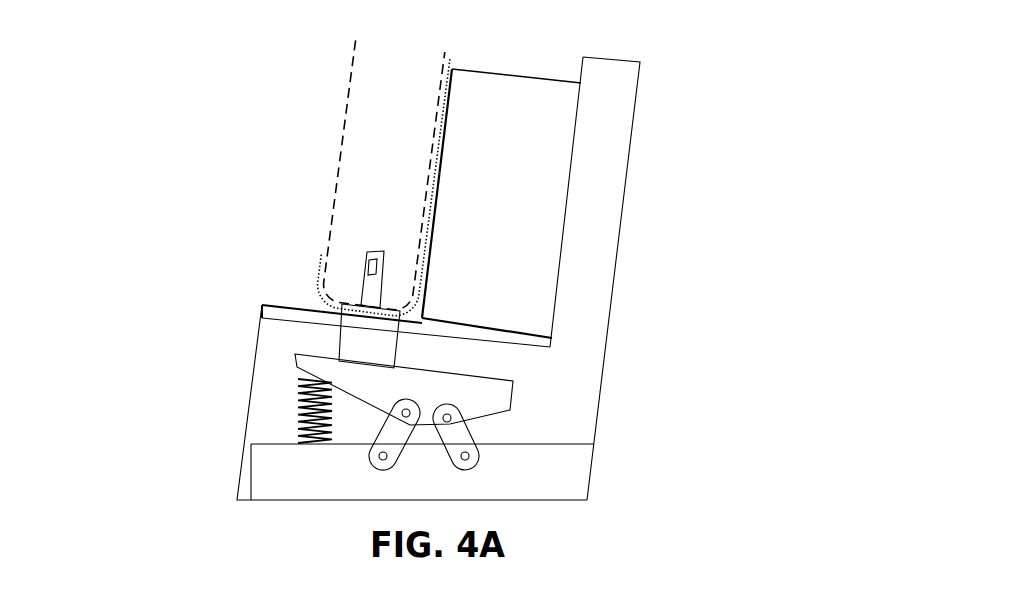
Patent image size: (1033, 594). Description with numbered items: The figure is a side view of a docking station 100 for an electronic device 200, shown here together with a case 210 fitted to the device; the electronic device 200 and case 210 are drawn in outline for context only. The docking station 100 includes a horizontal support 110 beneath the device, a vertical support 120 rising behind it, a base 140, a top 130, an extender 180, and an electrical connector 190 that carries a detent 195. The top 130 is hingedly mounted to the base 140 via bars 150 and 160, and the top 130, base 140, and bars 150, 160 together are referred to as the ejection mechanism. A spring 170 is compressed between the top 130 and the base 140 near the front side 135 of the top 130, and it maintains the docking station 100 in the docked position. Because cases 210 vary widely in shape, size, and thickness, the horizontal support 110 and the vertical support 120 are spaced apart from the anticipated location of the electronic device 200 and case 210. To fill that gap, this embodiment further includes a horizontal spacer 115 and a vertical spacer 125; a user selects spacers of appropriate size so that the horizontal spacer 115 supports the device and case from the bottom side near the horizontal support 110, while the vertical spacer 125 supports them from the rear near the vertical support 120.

The docking station 100 is at (142, 124).
The horizontal support 110 is at (505, 338).
The horizontal spacer 115 is at (470, 325).
The vertical support 120 is at (571, 192).
The vertical spacer 125 is at (530, 170).
The top 130 is at (497, 388).
The front side 135 is at (307, 367).
The base 140 is at (538, 480).
The bar 150 is at (468, 465).
The bar 160 is at (375, 462).
The spring 170 is at (298, 412).
The extender 180 is at (348, 347).
The electrical connector 190 is at (372, 287).
The detent 195 is at (366, 254).
The electronic device 200 is at (342, 127).
The case 210 is at (313, 277).